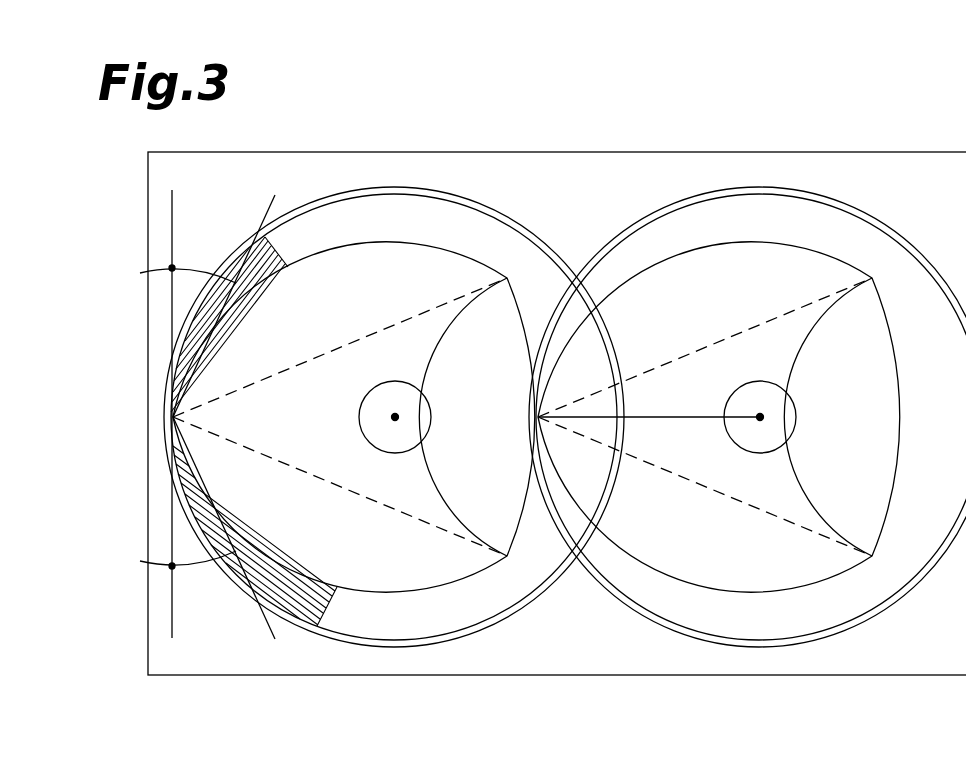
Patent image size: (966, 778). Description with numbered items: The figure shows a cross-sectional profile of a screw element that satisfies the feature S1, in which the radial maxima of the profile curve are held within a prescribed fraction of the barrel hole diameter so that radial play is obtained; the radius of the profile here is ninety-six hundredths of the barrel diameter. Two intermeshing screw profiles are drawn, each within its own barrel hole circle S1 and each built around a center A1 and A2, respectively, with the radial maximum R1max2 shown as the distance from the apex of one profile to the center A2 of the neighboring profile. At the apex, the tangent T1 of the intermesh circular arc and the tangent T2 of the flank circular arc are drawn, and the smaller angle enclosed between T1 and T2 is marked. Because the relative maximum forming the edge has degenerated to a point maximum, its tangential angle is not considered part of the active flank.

The profile feature S1 is at (385, 646).
The tangent of the intermesh circular arc T1 is at (173, 413).
The tangent of the flank circular arc T2 is at (230, 413).
The first rotor axis A1 is at (397, 419).
The second rotor axis A2 is at (762, 419).
The relative radial maximum R1max2 is at (668, 419).